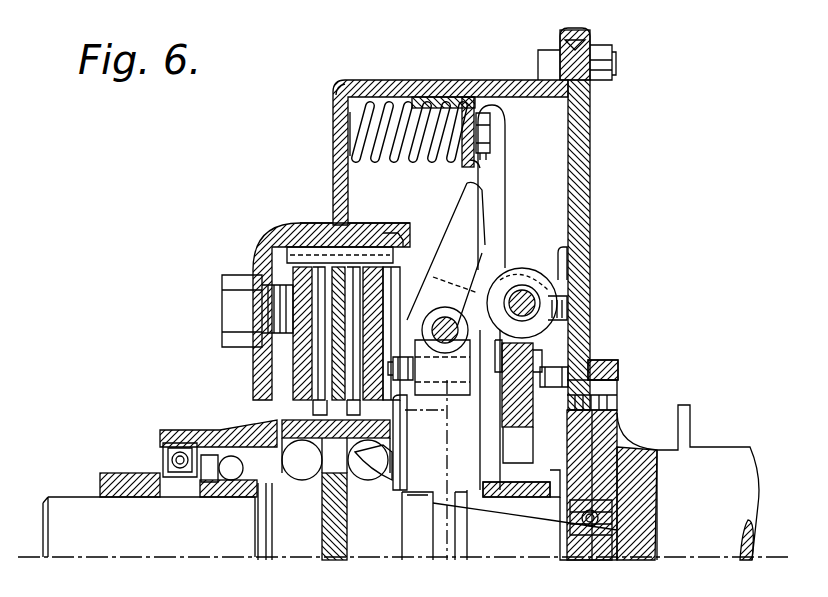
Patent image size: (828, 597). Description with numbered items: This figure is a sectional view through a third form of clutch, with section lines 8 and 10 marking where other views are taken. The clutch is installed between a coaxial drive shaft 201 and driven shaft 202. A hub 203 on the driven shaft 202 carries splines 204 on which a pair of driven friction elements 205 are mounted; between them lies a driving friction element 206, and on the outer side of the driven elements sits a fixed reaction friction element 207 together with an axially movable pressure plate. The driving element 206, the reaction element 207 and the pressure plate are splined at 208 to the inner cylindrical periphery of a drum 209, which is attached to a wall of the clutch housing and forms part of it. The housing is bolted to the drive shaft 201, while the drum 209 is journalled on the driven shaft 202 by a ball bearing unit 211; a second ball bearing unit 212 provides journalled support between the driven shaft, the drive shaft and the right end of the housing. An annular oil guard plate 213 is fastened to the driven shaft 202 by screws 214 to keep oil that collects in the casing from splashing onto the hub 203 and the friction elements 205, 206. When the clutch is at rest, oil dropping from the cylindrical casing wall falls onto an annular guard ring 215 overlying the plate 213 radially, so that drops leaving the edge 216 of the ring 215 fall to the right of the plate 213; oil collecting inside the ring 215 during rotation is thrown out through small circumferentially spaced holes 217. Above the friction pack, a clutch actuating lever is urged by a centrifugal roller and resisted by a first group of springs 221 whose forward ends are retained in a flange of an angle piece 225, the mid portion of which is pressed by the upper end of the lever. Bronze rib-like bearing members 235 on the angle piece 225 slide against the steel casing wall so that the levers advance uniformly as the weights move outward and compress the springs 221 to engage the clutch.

The section line 10 is at (408, 200).
The section line 8 is at (301, 152).
The springs of first group 221 is at (357, 116).
The angle piece 225 is at (444, 97).
The rib-like bearing member 235 is at (453, 96).
The holes 217 is at (364, 224).
The guard ring 215 is at (480, 150).
The edge of the ring 216 is at (428, 257).
The drive shaft 201 is at (718, 456).
The ball bearing unit 212 is at (592, 547).
The drum 209 is at (298, 223).
The driven friction element 205 is at (330, 223).
The splines 208 is at (287, 256).
The reaction friction element 207 is at (297, 343).
The driving friction element 206 is at (337, 378).
The ball bearing unit 211 is at (217, 428).
The driven shaft 202 is at (78, 505).
The splines 204 is at (306, 470).
The hub 203 is at (378, 480).
The oil guard plate 213 is at (392, 452).
The screws 214 is at (415, 510).